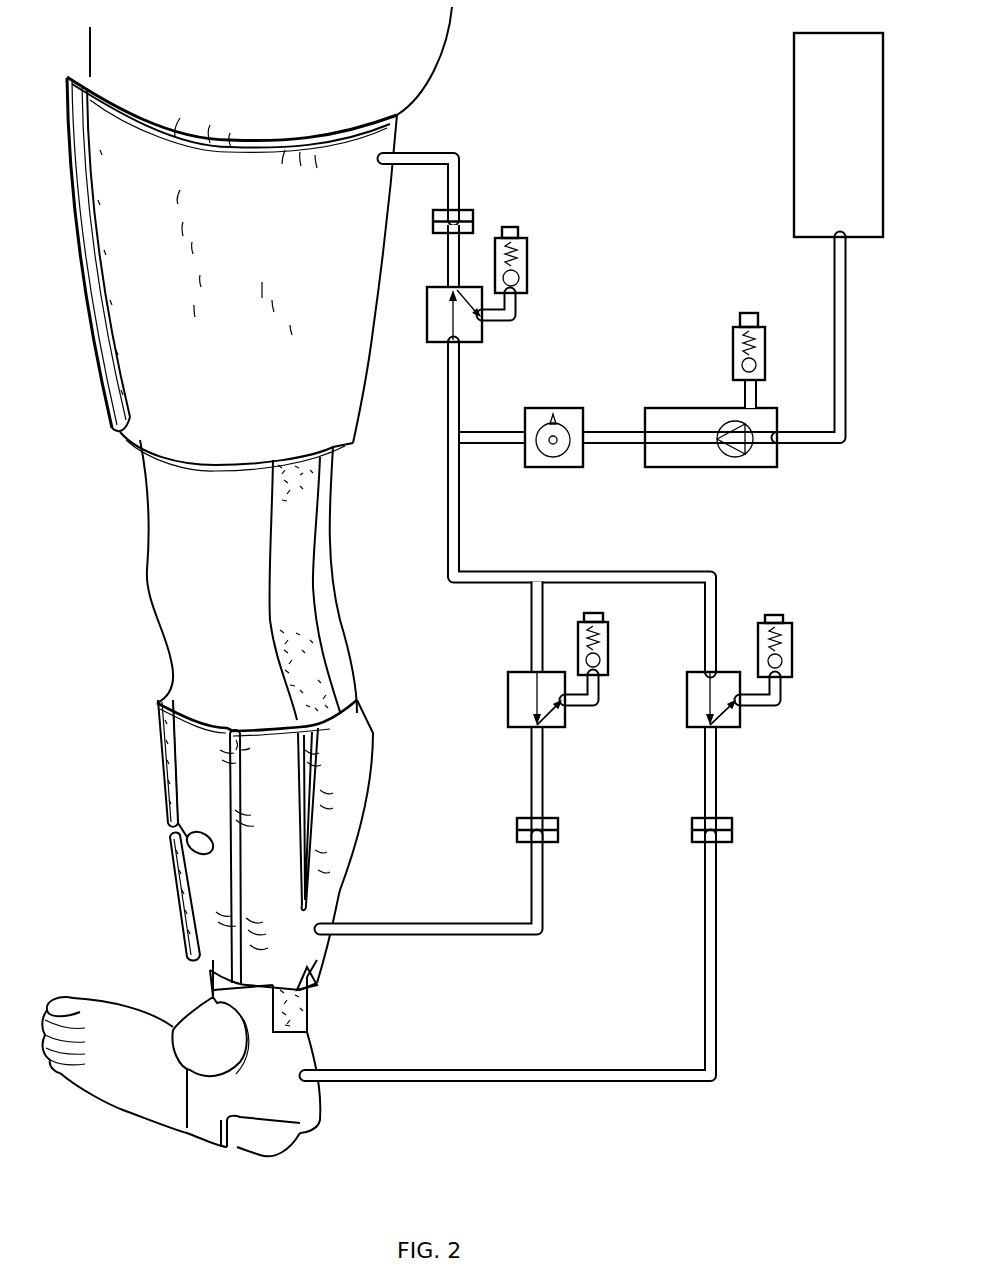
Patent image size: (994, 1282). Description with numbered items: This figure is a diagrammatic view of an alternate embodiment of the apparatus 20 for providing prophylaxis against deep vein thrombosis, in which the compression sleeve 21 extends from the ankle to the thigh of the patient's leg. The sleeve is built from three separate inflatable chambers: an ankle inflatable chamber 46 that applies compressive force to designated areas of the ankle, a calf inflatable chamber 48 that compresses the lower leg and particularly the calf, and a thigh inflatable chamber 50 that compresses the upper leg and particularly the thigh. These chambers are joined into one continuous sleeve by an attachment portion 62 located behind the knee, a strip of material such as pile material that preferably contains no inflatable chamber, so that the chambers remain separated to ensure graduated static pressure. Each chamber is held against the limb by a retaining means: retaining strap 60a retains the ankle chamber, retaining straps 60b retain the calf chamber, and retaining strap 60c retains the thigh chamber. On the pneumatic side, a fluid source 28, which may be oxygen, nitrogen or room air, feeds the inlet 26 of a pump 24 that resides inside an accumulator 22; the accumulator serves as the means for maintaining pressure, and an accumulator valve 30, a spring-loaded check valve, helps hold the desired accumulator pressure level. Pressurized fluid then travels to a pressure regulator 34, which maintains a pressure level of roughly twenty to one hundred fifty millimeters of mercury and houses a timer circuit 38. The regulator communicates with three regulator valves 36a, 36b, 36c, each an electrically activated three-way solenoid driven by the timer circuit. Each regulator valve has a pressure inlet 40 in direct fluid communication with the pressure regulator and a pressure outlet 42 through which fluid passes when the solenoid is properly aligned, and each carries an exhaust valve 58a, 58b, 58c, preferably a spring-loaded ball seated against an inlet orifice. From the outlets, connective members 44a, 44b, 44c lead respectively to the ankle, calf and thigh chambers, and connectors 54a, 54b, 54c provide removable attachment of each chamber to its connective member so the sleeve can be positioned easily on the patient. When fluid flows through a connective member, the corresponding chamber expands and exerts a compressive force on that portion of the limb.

The apparatus 20 is at (788, 843).
The compression sleeve 21 is at (118, 627).
The accumulator 22 is at (705, 461).
The pump 24 is at (737, 457).
The inlet 26 is at (845, 331).
The fluid source 28 is at (808, 98).
The accumulator valve 30 is at (735, 350).
The pressure regulator 34 is at (560, 408).
The regulator valve 36a is at (743, 717).
The regulator valve 36b is at (508, 690).
The regulator valve 36c is at (438, 343).
The timer circuit 38 is at (553, 447).
The pressure inlet 40 is at (467, 343).
The pressure outlet 42 is at (458, 283).
The connective member 44a is at (718, 900).
The connective member 44b is at (530, 779).
The connective member 44c is at (458, 168).
The ankle inflatable chamber 46 is at (303, 1105).
The calf inflatable chamber 48 is at (373, 720).
The thigh inflatable chamber 50 is at (379, 290).
The connector 54a is at (732, 832).
The connector 54b is at (552, 832).
The connector 54c is at (468, 211).
The exhaust valve 58a is at (792, 663).
The exhaust valve 58b is at (608, 663).
The exhaust valve 58c is at (526, 266).
The retaining strap 60a is at (197, 1025).
The retaining straps 60b is at (173, 875).
The retaining strap 60c is at (82, 328).
The attachment portion 62 is at (313, 593).